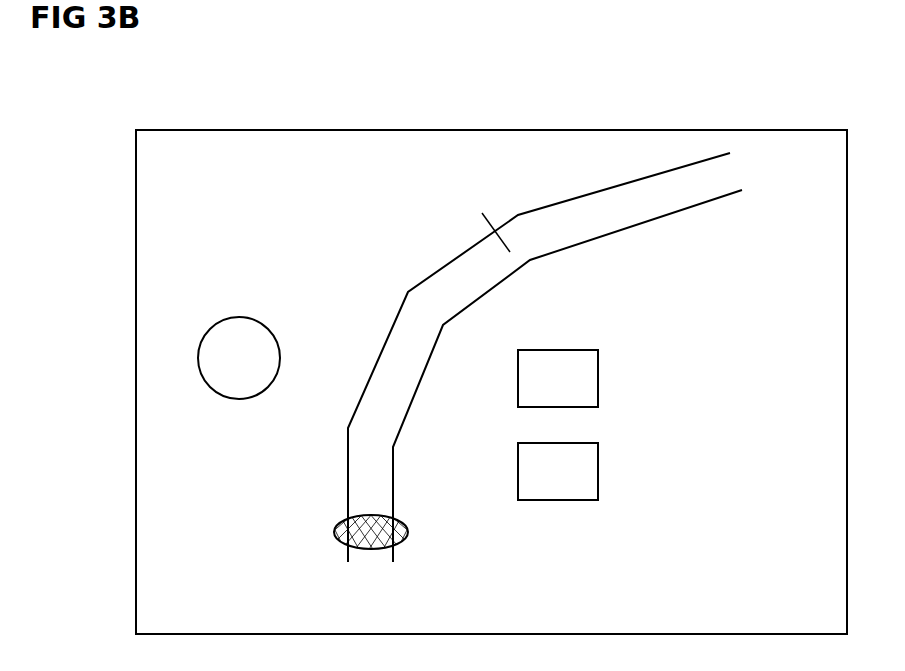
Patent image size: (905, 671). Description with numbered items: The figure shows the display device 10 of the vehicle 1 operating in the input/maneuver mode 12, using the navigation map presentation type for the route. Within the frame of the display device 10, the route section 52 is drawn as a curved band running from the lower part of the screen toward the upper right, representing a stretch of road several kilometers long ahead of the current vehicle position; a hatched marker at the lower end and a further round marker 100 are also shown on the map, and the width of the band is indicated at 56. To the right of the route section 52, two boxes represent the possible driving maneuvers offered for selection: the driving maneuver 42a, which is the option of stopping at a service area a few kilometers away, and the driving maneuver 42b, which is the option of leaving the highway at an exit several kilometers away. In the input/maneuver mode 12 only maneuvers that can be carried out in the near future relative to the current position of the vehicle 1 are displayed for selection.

The display device 10 is at (620, 125).
The input/maneuver mode 12 is at (398, 262).
The route section 52 is at (620, 258).
The track width 56 is at (482, 212).
The driving maneuver 42a is at (603, 377).
The driving maneuver 42b is at (603, 473).
The marker 100 is at (239, 358).
The vehicle 1 is at (368, 552).